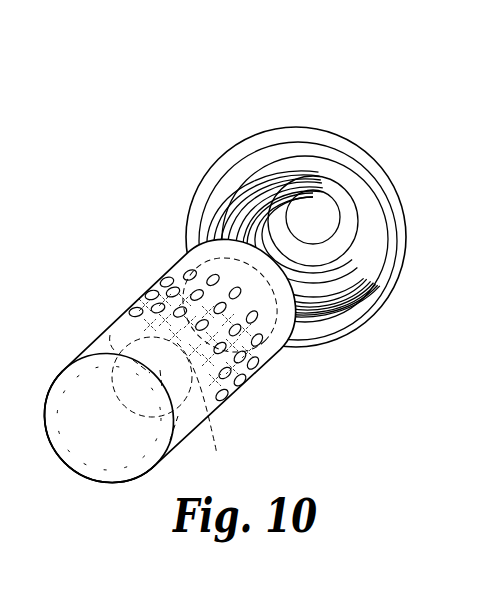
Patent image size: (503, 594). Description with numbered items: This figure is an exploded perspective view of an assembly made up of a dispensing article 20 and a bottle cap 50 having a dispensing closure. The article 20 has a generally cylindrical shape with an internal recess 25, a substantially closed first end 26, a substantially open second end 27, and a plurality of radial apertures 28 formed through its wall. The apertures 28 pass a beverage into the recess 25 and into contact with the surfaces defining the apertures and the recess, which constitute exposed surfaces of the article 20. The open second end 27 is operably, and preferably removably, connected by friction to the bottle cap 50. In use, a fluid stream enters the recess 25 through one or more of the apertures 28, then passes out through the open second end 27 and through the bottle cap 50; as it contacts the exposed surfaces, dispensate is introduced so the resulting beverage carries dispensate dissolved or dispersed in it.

The article 20 is at (106, 332).
The internal recess 25 is at (205, 415).
The substantially closed first end 26 is at (60, 468).
The substantially open second end 27 is at (238, 228).
The radial apertures 28 is at (281, 342).
The bottle cap 50 is at (250, 135).